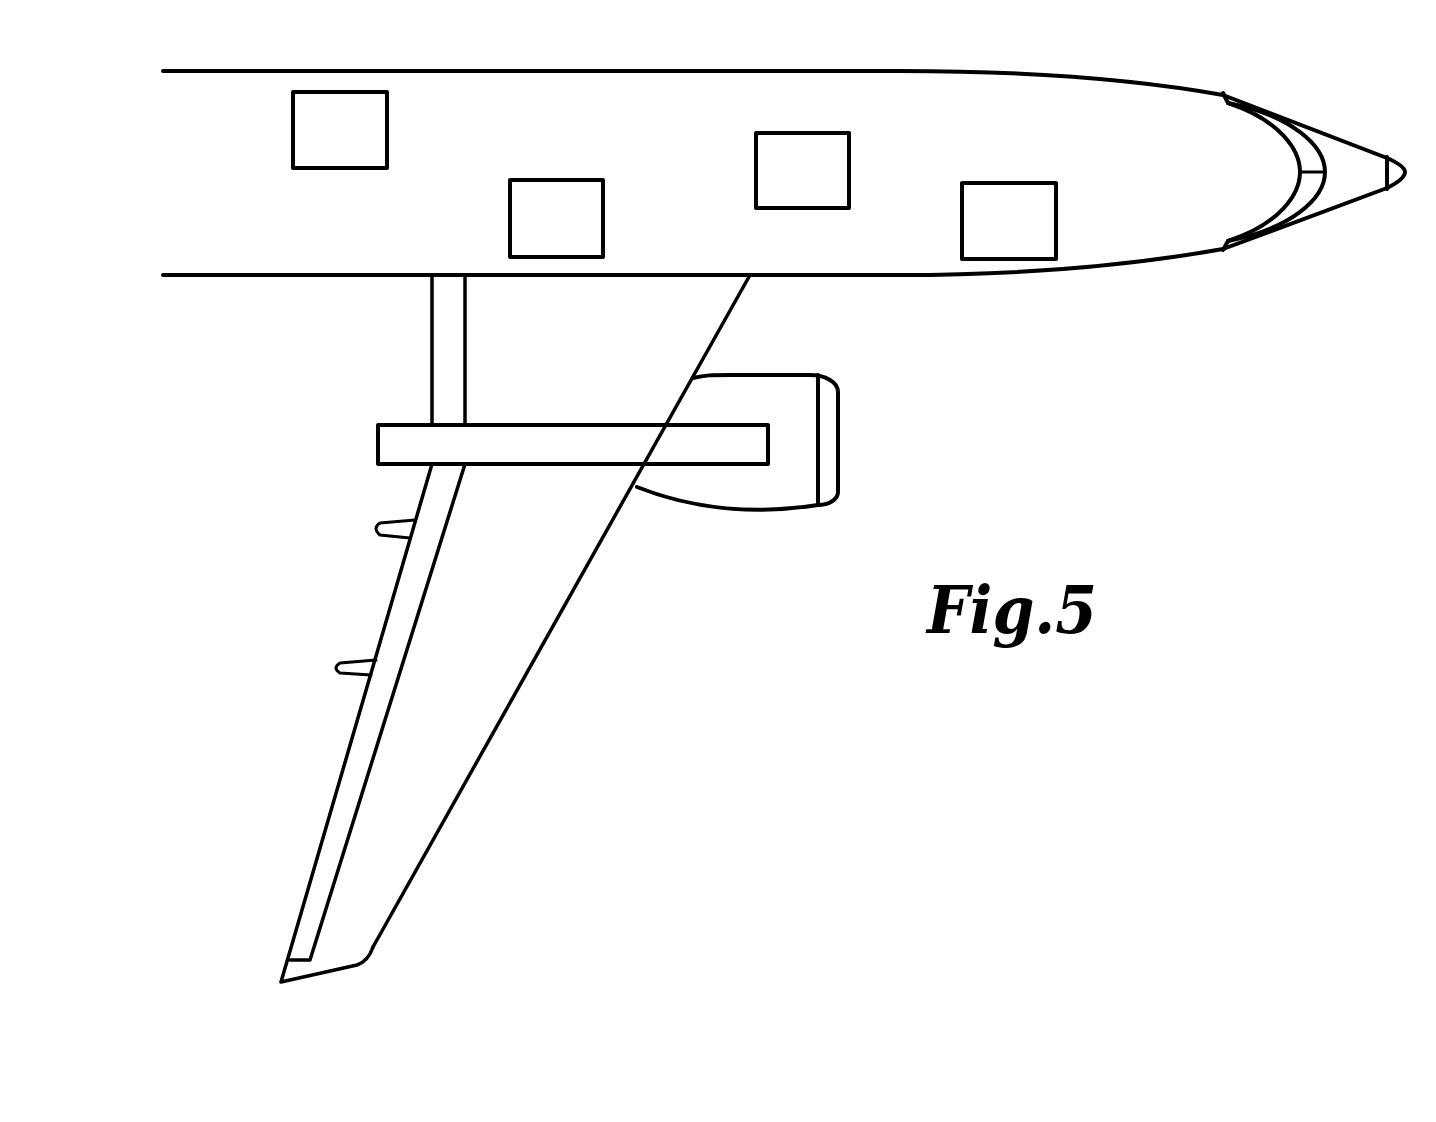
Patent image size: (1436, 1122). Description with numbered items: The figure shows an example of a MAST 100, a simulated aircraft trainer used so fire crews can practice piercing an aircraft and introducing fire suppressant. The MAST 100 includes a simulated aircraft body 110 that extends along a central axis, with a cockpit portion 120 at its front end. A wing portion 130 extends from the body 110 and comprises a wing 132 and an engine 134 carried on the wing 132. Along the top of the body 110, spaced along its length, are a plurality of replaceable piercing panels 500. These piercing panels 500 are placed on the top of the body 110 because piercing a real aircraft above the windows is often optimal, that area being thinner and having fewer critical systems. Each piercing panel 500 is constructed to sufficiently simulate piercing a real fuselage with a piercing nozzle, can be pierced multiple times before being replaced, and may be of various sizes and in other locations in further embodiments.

The MAST 100 is at (1093, 352).
The simulated aircraft body 110 is at (270, 277).
The cockpit portion 120 is at (1320, 229).
The wing portion 130 is at (577, 667).
The wing 132 is at (607, 540).
The engine 134 is at (798, 510).
The replaceable piercing panel 500 is at (292, 127).